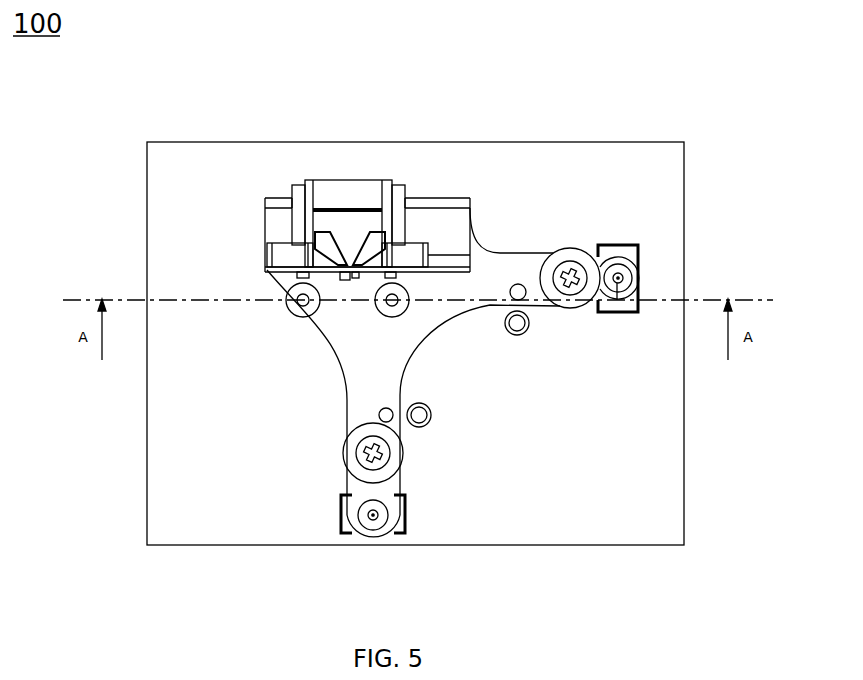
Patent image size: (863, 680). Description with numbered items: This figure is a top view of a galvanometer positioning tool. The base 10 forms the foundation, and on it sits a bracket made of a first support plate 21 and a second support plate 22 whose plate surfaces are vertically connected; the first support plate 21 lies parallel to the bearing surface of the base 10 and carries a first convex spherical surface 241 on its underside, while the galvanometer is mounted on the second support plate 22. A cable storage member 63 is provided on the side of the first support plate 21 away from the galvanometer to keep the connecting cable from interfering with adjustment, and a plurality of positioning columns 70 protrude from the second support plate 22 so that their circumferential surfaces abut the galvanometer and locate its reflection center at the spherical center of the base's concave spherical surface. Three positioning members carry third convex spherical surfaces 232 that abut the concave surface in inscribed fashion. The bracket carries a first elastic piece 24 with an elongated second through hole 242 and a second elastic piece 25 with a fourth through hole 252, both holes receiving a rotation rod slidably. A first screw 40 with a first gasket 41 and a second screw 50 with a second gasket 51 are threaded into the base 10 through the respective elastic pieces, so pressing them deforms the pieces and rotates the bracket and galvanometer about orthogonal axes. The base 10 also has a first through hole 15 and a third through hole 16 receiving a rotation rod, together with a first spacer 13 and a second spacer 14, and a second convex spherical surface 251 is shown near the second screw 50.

The base 10 is at (223, 170).
The second support plate 22 is at (300, 280).
The positioning column 70 is at (350, 262).
The cable storage member 63 is at (393, 255).
The second elastic piece 25 is at (490, 253).
The fourth through hole 252 is at (518, 284).
The second screw 50 is at (566, 248).
The second gasket 51 is at (598, 262).
The second spacer 14 is at (633, 250).
The third convex spherical surface 232 is at (273, 282).
The first support plate 21 is at (355, 322).
The first elastic piece 24 is at (370, 396).
The second through hole 242 is at (382, 415).
The first screw 40 is at (358, 452).
The first gasket 41 is at (370, 479).
The first convex spherical surface 241 is at (362, 513).
The first spacer 13 is at (403, 523).
The first through hole 15 is at (419, 421).
The third through hole 16 is at (517, 328).
The second convex spherical surface 251 is at (617, 285).